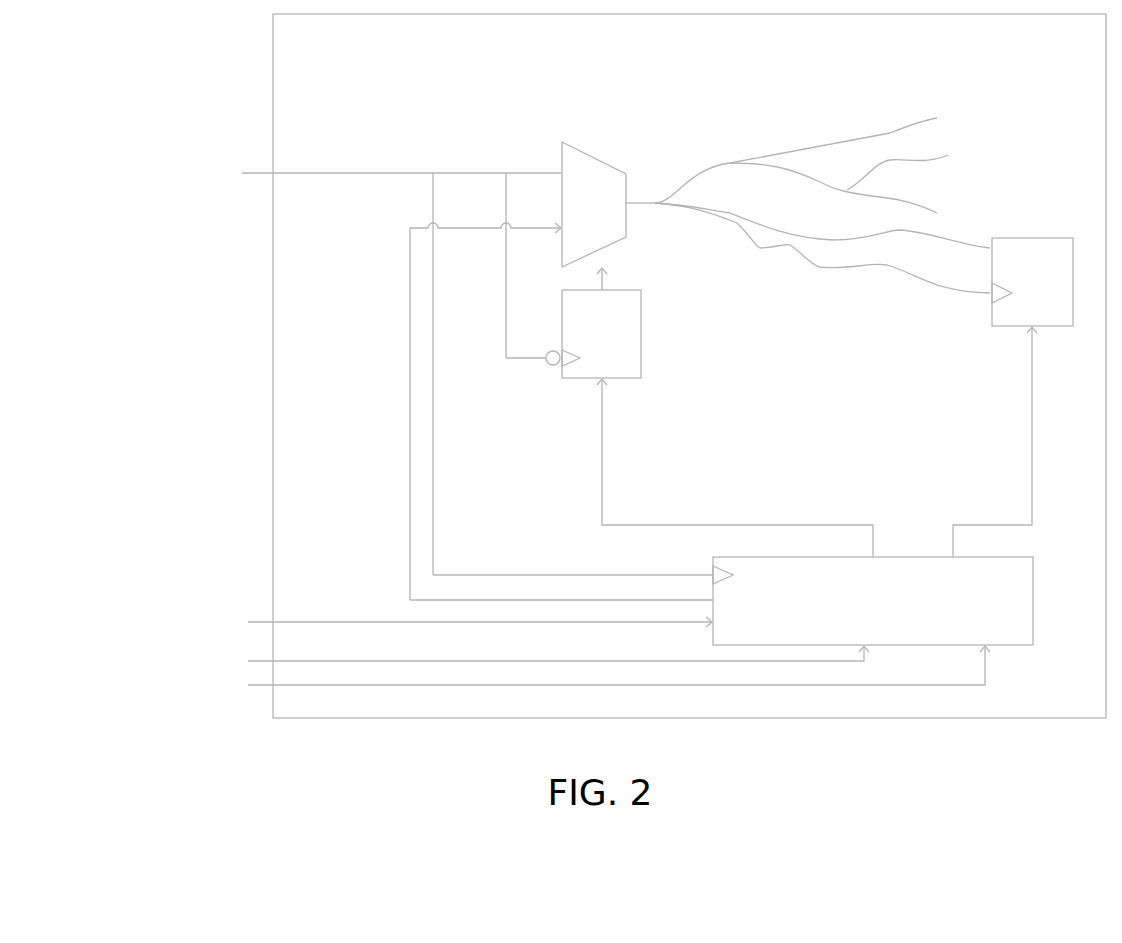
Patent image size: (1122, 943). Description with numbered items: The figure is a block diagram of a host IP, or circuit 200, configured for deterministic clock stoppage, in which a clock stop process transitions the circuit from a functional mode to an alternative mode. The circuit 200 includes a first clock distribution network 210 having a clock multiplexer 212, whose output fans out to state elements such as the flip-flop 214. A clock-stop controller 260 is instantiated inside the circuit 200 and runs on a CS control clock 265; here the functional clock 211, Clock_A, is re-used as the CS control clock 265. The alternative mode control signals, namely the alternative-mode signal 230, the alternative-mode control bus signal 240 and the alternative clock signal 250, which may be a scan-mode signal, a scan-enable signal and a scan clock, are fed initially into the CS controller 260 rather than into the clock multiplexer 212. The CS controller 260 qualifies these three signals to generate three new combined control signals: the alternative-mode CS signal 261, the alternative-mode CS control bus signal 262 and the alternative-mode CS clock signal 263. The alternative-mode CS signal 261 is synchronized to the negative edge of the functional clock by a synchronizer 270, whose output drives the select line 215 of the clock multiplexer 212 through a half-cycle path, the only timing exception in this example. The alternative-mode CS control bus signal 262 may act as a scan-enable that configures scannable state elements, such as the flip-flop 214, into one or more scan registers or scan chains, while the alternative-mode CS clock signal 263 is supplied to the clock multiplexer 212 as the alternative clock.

The host IP circuit 200 is at (790, 61).
The first clock distribution network 210 is at (892, 118).
The clock 211 is at (368, 356).
The clock multiplexer 212 is at (576, 216).
The flip-flop 214 is at (1016, 305).
The select line 215 is at (603, 262).
The alternative-mode signal 230 is at (498, 659).
The alternative-mode control bus signal 240 is at (557, 684).
The alternative clock signal 250 is at (421, 623).
The clock-stop controller 260 is at (857, 638).
The alternative-mode CS signal 261 is at (602, 435).
The alternative-mode CS control bus signal 262 is at (1032, 423).
The alternative-mode CS clock signal 263 is at (410, 447).
The CS control clock 265 is at (519, 574).
The synchronizer 270 is at (585, 358).